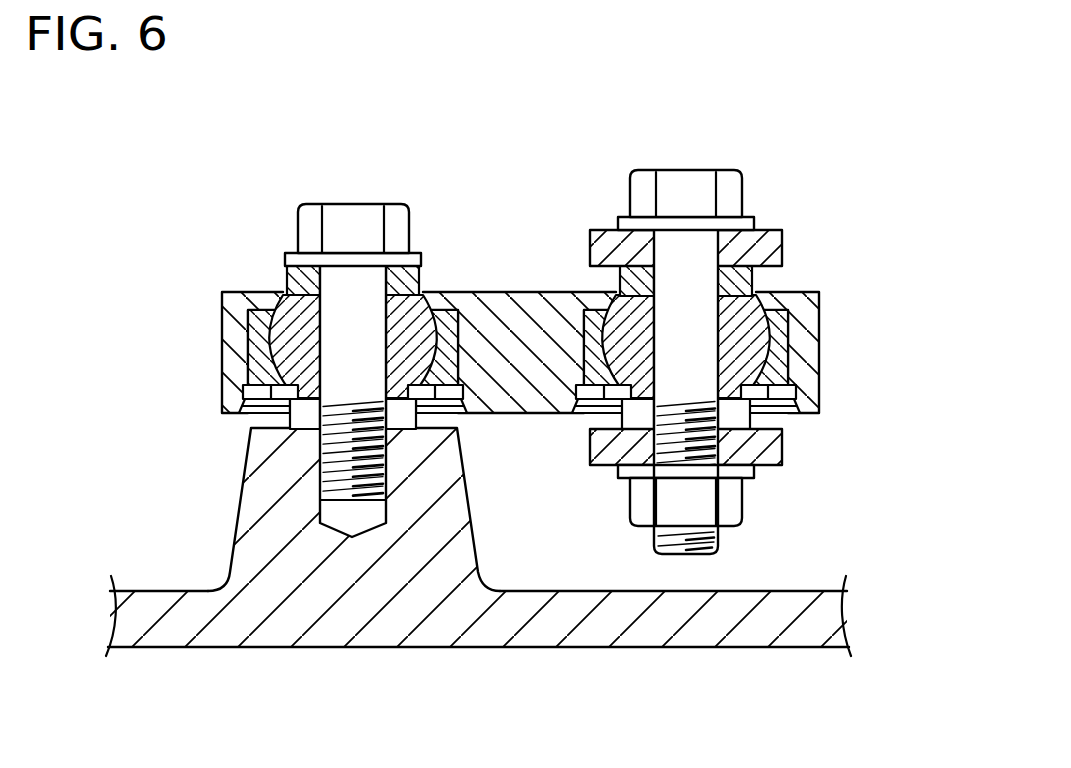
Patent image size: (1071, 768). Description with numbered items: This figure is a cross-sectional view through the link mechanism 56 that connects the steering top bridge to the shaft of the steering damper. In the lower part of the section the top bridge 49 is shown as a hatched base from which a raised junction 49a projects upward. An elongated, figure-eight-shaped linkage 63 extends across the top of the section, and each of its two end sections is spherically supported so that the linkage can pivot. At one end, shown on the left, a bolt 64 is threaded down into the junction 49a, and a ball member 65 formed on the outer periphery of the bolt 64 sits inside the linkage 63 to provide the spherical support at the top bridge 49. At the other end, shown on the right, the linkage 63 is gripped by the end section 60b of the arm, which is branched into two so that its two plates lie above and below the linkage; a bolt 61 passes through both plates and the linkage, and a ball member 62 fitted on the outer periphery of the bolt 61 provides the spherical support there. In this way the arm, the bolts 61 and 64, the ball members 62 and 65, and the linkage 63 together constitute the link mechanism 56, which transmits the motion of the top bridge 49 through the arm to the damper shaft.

The link mechanism 56 is at (163, 188).
The top bridge 49 is at (613, 648).
The junction 49a is at (245, 545).
The linkage 63 is at (820, 300).
The ball member 65 is at (276, 320).
The ball member 62 is at (752, 357).
The end section of arm 60b is at (762, 238).
The bolt 64 is at (359, 206).
The bolt 61 is at (695, 176).